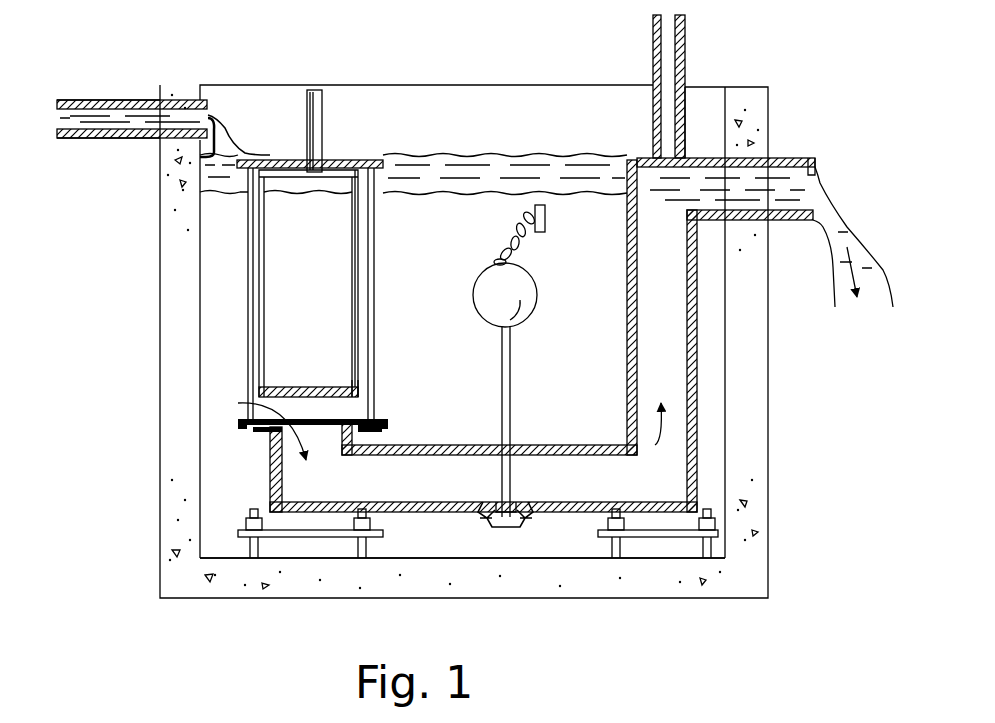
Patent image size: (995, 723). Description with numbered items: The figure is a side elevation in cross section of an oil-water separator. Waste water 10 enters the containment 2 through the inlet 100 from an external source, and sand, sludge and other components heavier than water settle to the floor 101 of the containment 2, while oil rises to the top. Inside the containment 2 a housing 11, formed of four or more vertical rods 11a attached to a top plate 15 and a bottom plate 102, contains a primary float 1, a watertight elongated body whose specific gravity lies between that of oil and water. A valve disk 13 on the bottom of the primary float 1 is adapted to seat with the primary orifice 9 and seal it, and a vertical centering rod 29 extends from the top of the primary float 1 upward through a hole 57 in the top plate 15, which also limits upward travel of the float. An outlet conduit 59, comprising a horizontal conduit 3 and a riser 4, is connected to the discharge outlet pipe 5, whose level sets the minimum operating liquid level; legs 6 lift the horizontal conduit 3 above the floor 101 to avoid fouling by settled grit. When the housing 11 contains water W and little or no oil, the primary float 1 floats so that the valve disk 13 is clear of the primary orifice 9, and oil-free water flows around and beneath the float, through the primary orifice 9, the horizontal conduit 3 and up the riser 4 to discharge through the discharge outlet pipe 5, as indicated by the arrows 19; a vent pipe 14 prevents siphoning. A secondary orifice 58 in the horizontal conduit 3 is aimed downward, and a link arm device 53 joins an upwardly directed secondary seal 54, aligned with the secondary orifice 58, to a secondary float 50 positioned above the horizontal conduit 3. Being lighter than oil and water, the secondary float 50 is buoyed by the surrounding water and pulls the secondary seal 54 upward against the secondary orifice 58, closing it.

The primary float 1 is at (330, 317).
The containment 2 is at (177, 334).
The horizontal conduit 3 is at (487, 447).
The riser 4 is at (672, 363).
The discharge outlet pipe 5 is at (785, 160).
The legs 6 is at (360, 547).
The primary orifice 9 is at (322, 427).
The waste water 10 is at (213, 140).
The housing 11 is at (380, 343).
The vertical rods 11a is at (372, 367).
The valve disk 13 is at (262, 386).
The vent pipe 14 is at (688, 44).
The top plate 15 is at (362, 160).
The arrows 19 is at (290, 433).
The vertical centering rod 29 is at (321, 90).
The secondary float 50 is at (505, 293).
The link arm device 53 is at (510, 383).
The secondary seal 54 is at (493, 520).
The hole 57 is at (327, 162).
The secondary orifice 58 is at (512, 513).
The outlet conduit 59 is at (620, 380).
The inlet 100 is at (97, 100).
The floor 101 is at (220, 558).
The bottom plate 102 is at (368, 432).
The water W is at (447, 207).